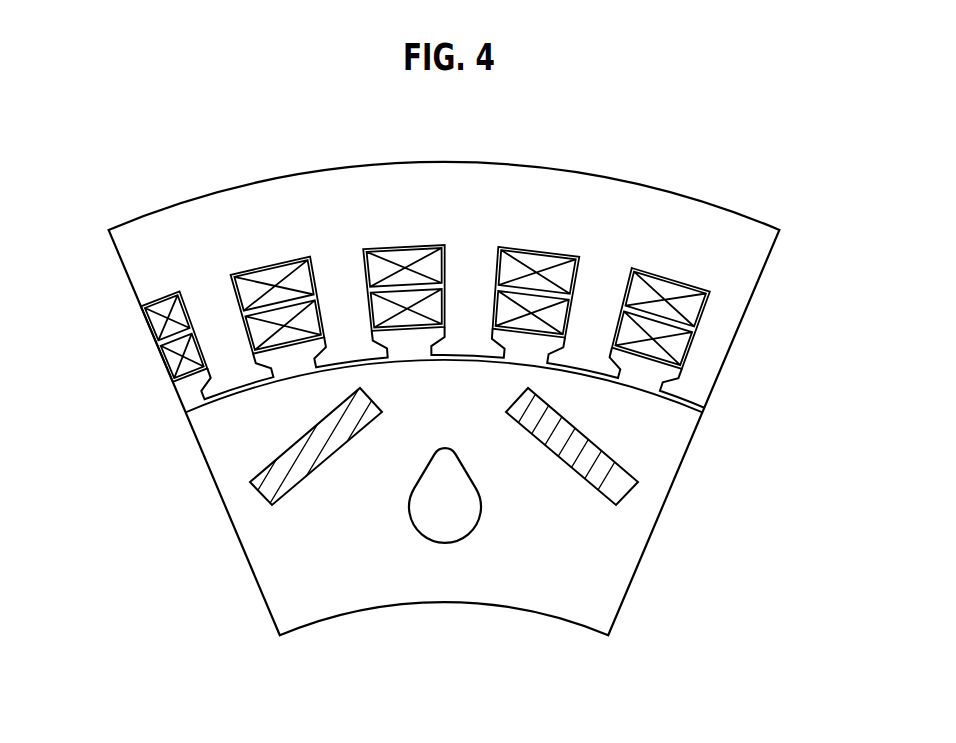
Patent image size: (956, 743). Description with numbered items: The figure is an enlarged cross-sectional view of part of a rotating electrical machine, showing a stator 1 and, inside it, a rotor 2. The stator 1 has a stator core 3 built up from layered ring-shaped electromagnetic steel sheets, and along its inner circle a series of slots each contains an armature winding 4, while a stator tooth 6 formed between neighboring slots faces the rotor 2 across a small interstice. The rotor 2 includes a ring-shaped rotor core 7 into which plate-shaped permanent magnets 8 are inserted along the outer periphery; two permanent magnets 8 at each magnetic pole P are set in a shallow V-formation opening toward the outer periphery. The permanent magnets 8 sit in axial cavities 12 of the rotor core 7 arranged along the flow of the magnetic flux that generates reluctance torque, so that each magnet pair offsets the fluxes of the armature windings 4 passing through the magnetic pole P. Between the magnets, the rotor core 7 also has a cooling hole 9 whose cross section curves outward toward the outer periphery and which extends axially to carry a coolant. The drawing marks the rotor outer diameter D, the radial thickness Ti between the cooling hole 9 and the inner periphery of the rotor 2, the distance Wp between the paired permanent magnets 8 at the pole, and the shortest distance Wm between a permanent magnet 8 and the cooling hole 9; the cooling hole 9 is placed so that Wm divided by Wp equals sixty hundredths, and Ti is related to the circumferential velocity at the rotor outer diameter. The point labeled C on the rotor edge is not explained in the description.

The stator 1 is at (708, 195).
The rotor 2 is at (472, 487).
The stator core 3 is at (461, 265).
The armature winding 4 is at (547, 266).
The stator tooth 6 is at (352, 348).
The rotor core 7 is at (593, 573).
The permanent magnet 8 is at (474, 472).
The cooling hole 9 is at (411, 518).
The cavity 12 is at (582, 479).
The magnetic pole P is at (455, 379).
The point C on rotor side edge C is at (688, 437).
The outer diameter of the rotor D is at (245, 518).
The distance between paired permanent magnets Wp is at (504, 411).
The shortest distance between permanent magnet and cooling hole Wm is at (527, 430).
The thickness between cooling hole and rotor inner periphery Ti is at (445, 546).